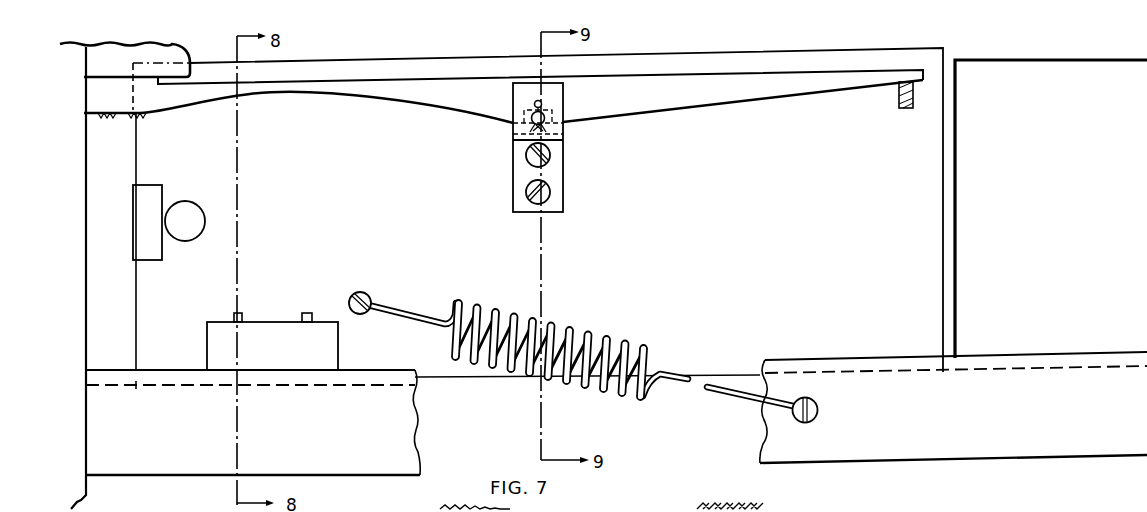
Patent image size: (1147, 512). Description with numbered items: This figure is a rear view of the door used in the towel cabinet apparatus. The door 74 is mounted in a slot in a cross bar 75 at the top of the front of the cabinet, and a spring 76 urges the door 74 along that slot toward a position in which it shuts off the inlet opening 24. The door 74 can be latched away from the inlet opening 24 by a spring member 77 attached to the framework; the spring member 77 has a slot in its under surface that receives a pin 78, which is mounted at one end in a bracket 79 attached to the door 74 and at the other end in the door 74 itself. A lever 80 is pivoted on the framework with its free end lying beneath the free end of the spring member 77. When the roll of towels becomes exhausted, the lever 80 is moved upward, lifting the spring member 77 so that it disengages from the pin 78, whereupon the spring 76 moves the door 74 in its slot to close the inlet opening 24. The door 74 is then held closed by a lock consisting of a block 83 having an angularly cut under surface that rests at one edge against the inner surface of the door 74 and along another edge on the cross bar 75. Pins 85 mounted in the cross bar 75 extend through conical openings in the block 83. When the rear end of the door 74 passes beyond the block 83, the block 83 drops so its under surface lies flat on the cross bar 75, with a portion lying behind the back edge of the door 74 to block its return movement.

The inlet opening 24 is at (1055, 67).
The door 74 is at (778, 54).
The cross bar 75 is at (985, 460).
The spring 76 is at (605, 335).
The spring member 77 is at (682, 109).
The pin 78 is at (533, 125).
The bracket 79 is at (513, 192).
The lever 80 is at (904, 110).
The block 83 is at (207, 340).
The pins 85 is at (303, 313).